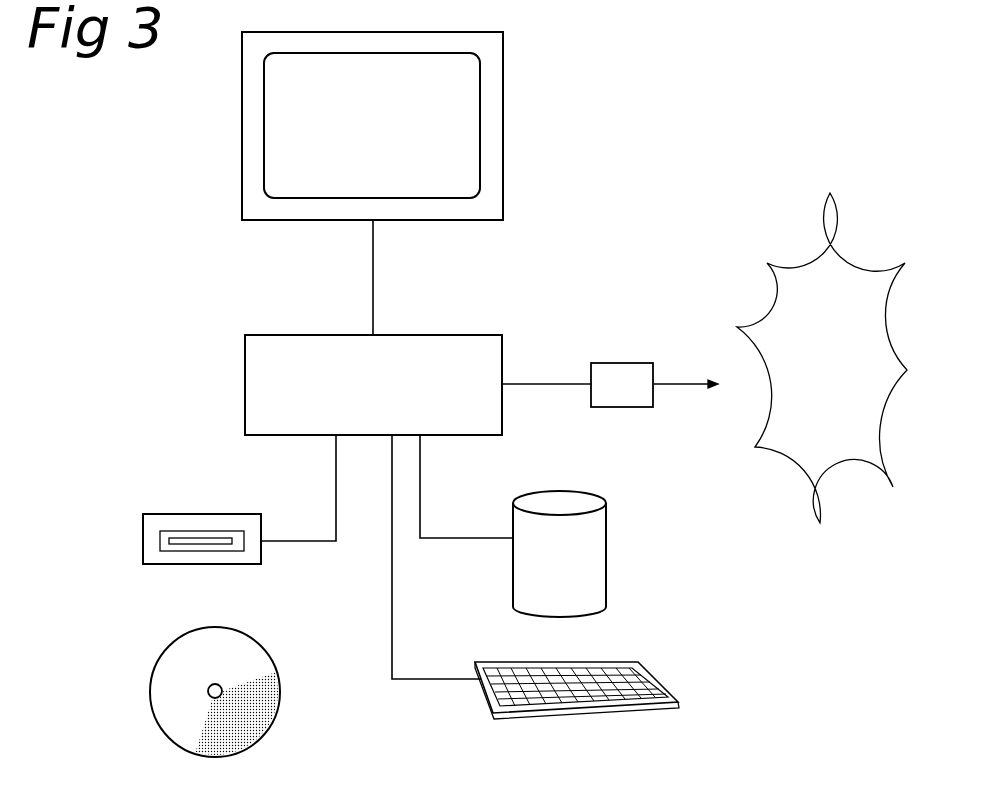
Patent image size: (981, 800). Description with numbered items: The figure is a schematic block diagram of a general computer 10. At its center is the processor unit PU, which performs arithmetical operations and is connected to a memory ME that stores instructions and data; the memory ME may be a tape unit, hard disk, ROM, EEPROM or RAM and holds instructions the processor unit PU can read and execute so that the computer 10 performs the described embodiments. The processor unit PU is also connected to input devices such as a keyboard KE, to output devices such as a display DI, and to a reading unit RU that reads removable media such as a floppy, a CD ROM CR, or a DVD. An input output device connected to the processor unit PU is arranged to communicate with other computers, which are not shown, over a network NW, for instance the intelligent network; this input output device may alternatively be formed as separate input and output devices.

The computer 10 is at (625, 212).
The display DI is at (450, 127).
The processor unit PU is at (310, 345).
The network NW is at (852, 355).
The reading unit RU is at (165, 525).
The memory ME is at (585, 540).
The CD ROM CR is at (221, 644).
The keyboard KE is at (653, 677).